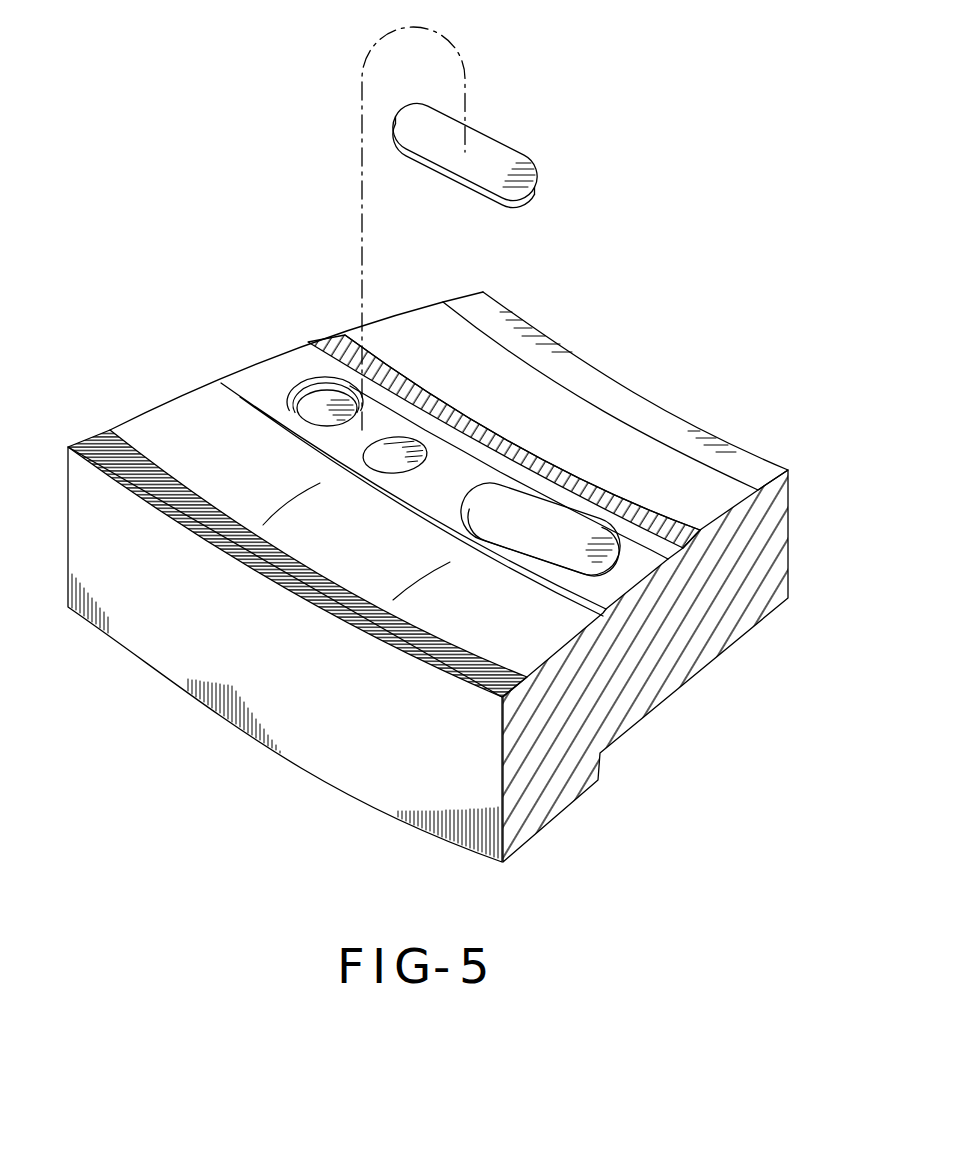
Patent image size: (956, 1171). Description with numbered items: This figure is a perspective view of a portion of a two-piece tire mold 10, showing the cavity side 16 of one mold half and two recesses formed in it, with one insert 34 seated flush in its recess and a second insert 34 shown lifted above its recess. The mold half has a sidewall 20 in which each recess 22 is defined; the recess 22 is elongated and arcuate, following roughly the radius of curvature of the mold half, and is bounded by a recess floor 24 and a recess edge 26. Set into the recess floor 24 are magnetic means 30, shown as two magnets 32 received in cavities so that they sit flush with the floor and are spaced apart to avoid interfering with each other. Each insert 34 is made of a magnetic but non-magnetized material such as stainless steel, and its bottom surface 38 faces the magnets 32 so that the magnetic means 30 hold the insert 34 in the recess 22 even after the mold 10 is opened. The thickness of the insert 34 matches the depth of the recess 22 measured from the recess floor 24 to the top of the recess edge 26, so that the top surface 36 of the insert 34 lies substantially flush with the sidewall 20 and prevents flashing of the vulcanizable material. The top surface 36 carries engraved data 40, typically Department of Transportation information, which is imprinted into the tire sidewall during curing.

The tire mold 10 is at (596, 290).
The cavity side 16 is at (618, 402).
The sidewall 20 is at (438, 485).
The recess 22 is at (320, 400).
The recess floor 24 is at (407, 400).
The recess edge 26 is at (372, 427).
The magnetic means 30 is at (381, 460).
The magnet 32 is at (313, 384).
The insert 34 is at (560, 550).
The top surface 36 is at (500, 208).
The bottom surface 38 is at (488, 157).
The data 40 is at (528, 514).